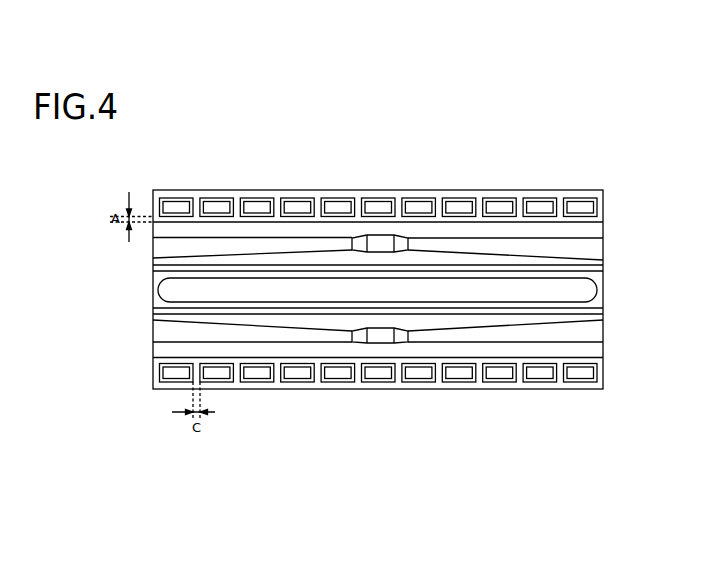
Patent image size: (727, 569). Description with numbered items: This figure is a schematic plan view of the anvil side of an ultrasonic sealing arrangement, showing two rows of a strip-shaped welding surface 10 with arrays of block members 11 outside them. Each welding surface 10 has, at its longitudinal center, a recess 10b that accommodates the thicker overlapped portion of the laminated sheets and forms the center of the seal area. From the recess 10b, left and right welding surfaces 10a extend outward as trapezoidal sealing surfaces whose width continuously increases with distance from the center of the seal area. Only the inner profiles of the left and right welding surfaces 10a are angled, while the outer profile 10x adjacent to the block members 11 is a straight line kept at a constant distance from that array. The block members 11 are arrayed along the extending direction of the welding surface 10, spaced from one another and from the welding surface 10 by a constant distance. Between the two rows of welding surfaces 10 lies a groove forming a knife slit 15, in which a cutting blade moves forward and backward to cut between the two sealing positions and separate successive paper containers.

The welding surface 10 is at (378, 292).
The left and right welding surfaces 10a is at (310, 242).
The recess 10b is at (380, 292).
The profile 10x is at (584, 238).
The block members 11 is at (502, 199).
The knife slit 15 is at (597, 289).